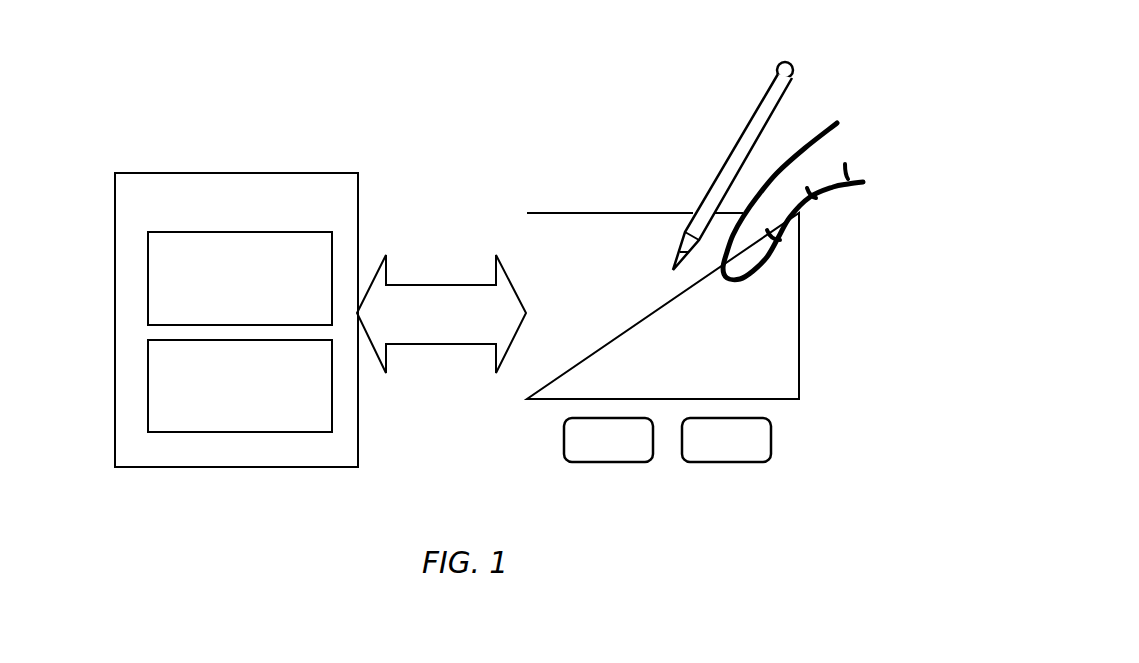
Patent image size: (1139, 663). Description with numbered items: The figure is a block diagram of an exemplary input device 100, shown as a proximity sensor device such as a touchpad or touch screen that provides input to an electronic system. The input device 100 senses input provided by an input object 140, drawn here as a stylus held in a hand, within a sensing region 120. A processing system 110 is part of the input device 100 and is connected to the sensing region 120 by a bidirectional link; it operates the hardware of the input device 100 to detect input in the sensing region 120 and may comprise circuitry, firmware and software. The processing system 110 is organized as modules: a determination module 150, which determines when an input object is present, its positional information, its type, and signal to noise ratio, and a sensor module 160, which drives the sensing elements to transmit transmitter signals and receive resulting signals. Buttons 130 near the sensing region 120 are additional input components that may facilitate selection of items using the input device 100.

The input device 100 is at (238, 117).
The processing system 110 is at (114, 248).
The sensing region 120 is at (799, 281).
The buttons 130 is at (650, 458).
The input object 140 is at (853, 45).
The determination module 150 is at (240, 278).
The sensor module 160 is at (240, 386).